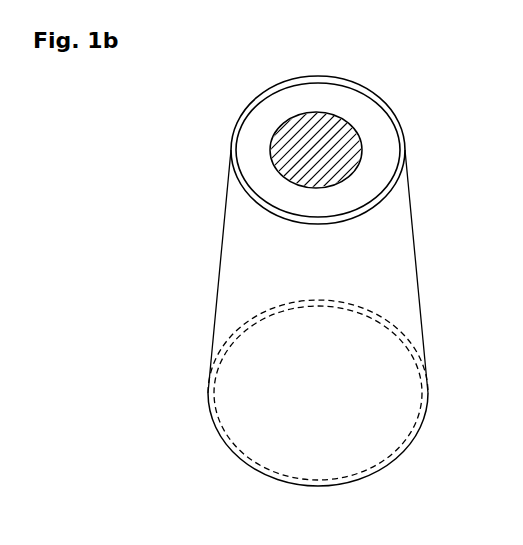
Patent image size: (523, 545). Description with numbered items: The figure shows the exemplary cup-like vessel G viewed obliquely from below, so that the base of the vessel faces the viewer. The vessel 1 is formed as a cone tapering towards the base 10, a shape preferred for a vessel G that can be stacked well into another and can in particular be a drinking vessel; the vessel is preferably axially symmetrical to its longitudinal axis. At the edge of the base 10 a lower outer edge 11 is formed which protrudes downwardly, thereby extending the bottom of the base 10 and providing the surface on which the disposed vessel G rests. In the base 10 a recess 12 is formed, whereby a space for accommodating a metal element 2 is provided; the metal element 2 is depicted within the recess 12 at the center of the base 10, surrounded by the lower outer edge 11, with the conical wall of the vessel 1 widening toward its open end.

The vessel 1 is at (252, 255).
The base 10 is at (259, 123).
The lower outer edge 11 is at (233, 145).
The metal element 2 is at (348, 130).
The recess 12 is at (350, 155).
The cup-like vessel G is at (455, 125).